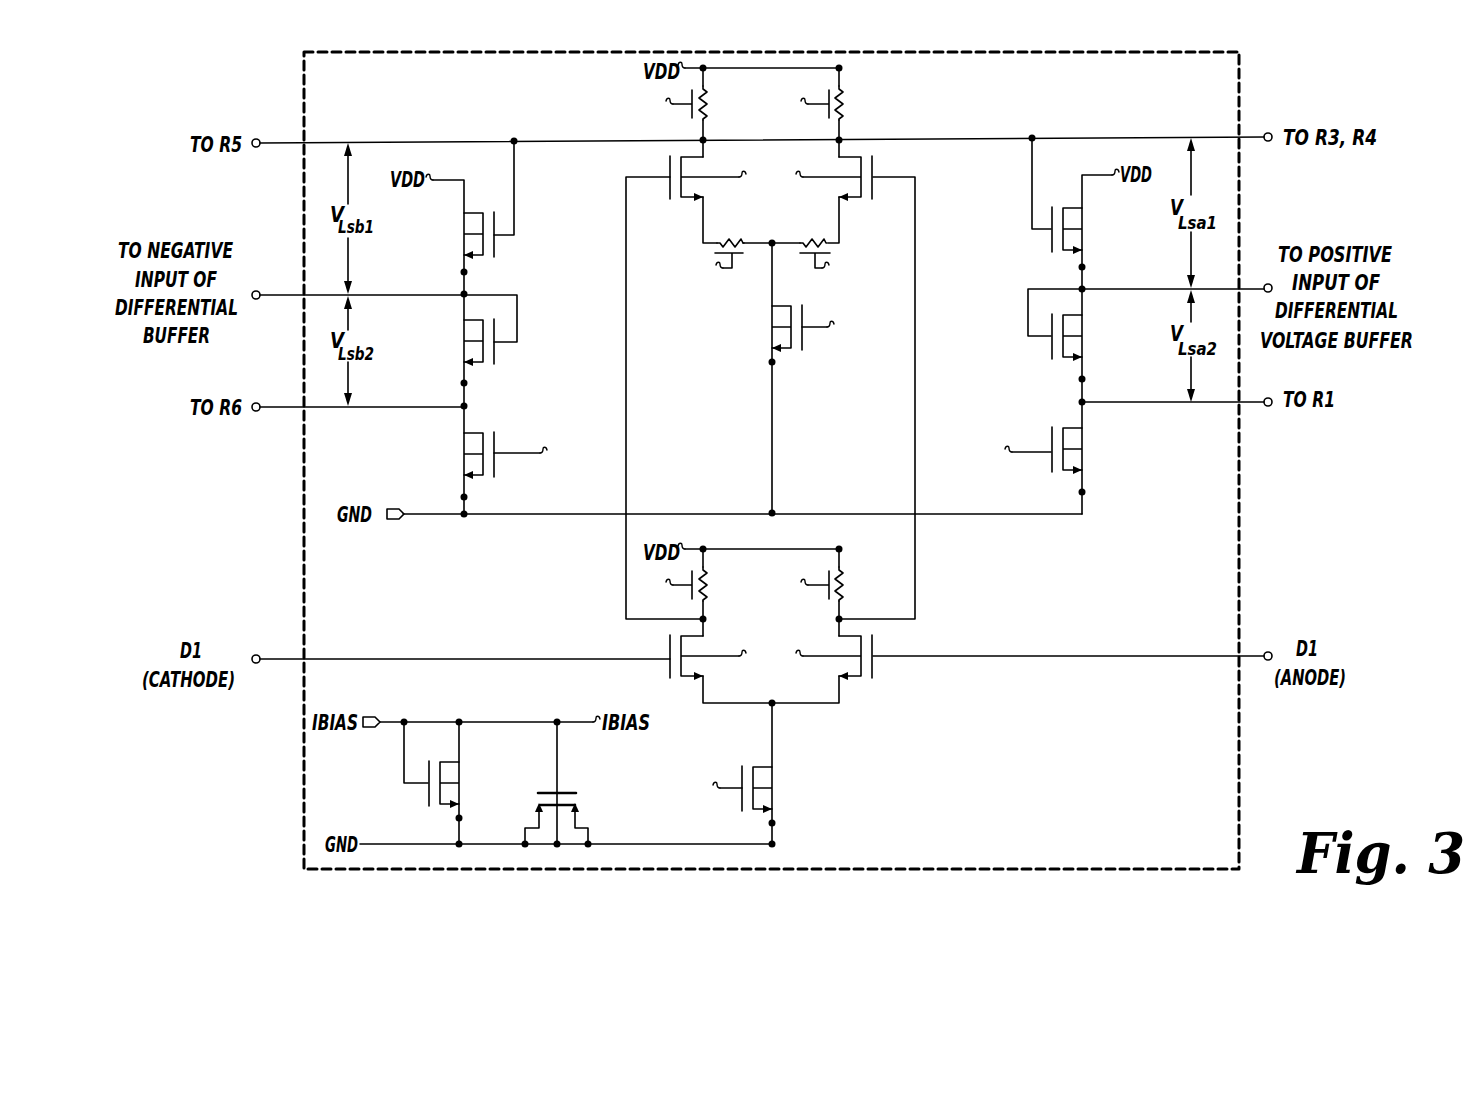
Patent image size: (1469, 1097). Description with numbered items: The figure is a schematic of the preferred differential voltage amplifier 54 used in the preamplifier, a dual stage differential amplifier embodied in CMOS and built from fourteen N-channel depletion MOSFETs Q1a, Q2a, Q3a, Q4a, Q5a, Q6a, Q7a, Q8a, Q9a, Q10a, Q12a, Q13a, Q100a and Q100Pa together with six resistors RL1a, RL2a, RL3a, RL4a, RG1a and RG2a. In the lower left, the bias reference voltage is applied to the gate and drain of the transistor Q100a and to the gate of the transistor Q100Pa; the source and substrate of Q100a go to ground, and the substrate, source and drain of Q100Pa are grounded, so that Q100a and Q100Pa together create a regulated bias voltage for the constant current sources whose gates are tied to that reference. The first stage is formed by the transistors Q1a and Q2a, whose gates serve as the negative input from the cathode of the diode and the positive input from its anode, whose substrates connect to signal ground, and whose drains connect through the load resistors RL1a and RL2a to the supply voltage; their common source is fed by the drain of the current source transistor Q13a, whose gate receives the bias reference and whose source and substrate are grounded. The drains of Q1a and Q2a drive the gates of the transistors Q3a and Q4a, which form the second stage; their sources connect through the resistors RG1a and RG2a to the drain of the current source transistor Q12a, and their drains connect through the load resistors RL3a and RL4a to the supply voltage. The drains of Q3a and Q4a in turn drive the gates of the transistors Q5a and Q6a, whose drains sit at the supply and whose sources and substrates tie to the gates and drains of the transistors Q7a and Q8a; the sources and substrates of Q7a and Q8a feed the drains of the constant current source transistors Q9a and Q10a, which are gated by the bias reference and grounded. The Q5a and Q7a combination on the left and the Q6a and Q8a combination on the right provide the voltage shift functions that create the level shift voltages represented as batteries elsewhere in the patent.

The differential voltage amplifier 54 is at (1197, 870).
The N-channel depletion MOSFET Q1a is at (693, 654).
The N-channel depletion MOSFET Q2a is at (851, 654).
The N-channel depletion MOSFET Q3a is at (693, 175).
The N-channel depletion MOSFET Q4a is at (851, 175).
The N-channel depletion MOSFET Q5a is at (499, 239).
The N-channel depletion MOSFET Q6a is at (1087, 230).
The N-channel depletion MOSFET Q7a is at (499, 345).
The N-channel depletion MOSFET Q8a is at (1087, 337).
The N-channel depletion MOSFET Q9a is at (531, 461).
The N-channel depletion MOSFET Q10a is at (1040, 450).
The N-channel depletion MOSFET Q12a is at (825, 343).
The N-channel depletion MOSFET Q13a is at (743, 789).
The N-channel depletion MOSFET Q100a is at (413, 788).
The N-channel depletion MOSFET Q100Pa is at (589, 817).
The resistor RL1a is at (695, 575).
The resistor RL2a is at (833, 575).
The resistor RL3a is at (695, 94).
The resistor RL4a is at (833, 94).
The resistor RG1a is at (716, 250).
The resistor RG2a is at (825, 250).